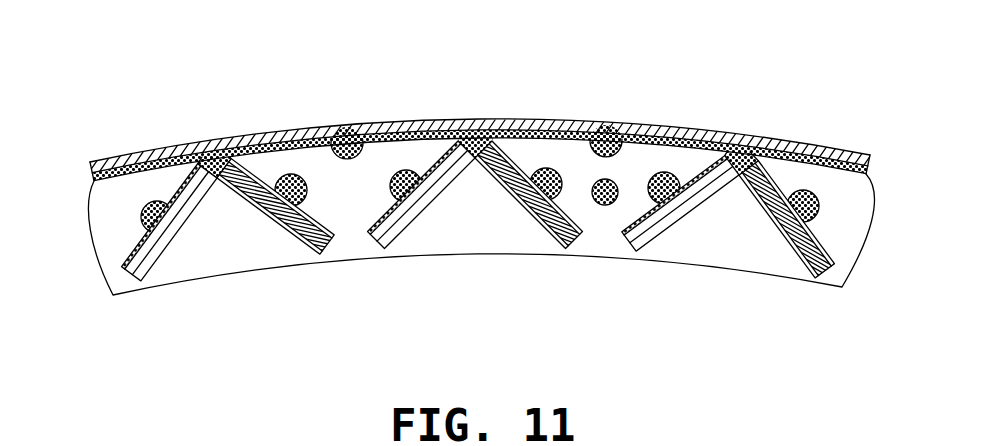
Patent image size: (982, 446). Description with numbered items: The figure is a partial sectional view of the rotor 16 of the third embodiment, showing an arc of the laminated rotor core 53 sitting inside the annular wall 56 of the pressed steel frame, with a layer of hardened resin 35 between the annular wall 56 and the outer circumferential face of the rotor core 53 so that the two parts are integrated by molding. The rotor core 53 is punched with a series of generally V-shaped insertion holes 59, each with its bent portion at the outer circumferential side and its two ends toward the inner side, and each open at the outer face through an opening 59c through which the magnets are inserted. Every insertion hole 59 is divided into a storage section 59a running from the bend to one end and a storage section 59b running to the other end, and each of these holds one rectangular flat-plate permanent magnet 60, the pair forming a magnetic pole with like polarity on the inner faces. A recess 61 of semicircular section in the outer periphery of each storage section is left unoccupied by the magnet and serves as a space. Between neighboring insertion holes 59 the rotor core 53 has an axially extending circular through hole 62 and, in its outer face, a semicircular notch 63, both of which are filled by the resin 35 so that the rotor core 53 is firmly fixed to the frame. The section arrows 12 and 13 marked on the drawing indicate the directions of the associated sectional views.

The rotor 16 is at (497, 182).
The rotor core 53 is at (215, 279).
The annular wall 56 is at (378, 123).
The resin 35 is at (752, 137).
The insertion hole 59 is at (242, 154).
The storage section 59a is at (388, 251).
The storage section 59b is at (566, 250).
The opening 59c is at (212, 155).
The permanent magnet 60 is at (638, 253).
The recess 61 is at (281, 177).
The through hole 62 is at (616, 185).
The notch 63 is at (343, 126).
The section line for FIG. 12 is at (516, 66).
The section line for FIG. 13 is at (588, 75).